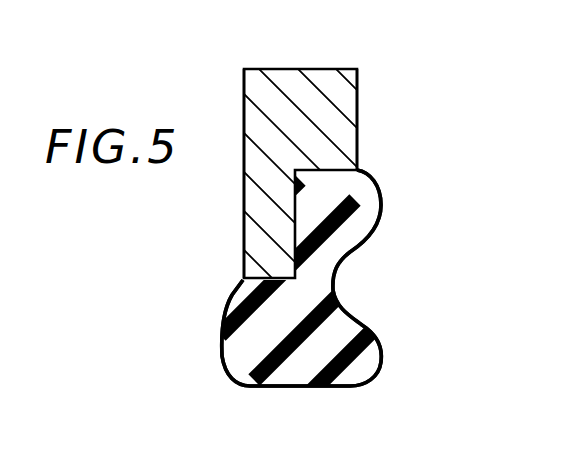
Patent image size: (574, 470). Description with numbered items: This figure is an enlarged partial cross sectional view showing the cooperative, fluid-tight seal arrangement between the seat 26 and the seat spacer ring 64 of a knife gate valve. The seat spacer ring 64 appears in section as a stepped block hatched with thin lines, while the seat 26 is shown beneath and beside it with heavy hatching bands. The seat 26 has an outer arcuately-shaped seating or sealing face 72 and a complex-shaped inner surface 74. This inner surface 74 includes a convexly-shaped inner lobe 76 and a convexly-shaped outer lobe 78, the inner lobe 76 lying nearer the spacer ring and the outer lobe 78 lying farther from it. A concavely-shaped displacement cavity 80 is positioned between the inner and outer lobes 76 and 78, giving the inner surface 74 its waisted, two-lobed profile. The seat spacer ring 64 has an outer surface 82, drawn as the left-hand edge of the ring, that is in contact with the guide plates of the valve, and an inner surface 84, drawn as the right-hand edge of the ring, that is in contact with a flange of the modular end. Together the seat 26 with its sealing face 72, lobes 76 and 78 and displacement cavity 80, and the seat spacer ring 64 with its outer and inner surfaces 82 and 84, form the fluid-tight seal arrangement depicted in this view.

The seat spacer ring 64 is at (307, 93).
The inner surface 84 is at (357, 117).
The outer surface 82 is at (243, 162).
The inner surface 74 is at (420, 262).
The inner lobe 76 is at (380, 200).
The displacement cavity 80 is at (345, 284).
The outer lobe 78 is at (378, 365).
The sealing face 72 is at (214, 337).
The seat 26 is at (293, 368).